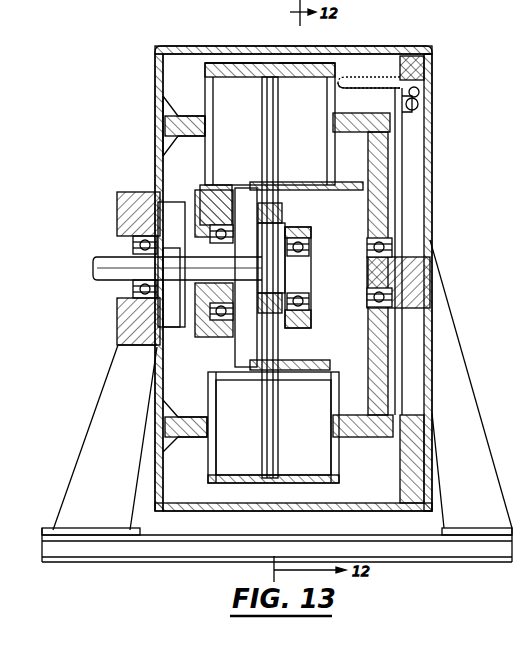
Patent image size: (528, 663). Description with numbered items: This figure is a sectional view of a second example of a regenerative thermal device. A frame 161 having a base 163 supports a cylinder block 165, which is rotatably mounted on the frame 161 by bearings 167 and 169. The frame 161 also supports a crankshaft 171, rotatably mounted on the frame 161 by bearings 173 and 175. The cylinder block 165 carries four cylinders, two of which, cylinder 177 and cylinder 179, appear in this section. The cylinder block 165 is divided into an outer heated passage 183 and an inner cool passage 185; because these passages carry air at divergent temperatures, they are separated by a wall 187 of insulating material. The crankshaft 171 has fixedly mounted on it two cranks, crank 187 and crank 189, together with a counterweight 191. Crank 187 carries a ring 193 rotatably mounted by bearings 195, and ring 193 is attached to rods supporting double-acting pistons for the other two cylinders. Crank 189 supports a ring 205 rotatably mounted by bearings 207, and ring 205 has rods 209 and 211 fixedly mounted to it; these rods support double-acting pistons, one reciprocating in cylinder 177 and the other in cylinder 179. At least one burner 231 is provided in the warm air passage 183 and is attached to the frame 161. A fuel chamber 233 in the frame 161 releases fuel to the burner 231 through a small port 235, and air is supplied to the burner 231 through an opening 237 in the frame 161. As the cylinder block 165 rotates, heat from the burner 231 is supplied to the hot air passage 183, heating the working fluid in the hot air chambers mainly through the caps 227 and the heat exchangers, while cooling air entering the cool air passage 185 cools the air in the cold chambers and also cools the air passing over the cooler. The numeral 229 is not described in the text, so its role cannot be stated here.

The frame 161 is at (118, 198).
The base 163 is at (82, 452).
The cylinder block 165 is at (204, 192).
The bearing 167 is at (200, 342).
The bearing 169 is at (362, 300).
The crankshaft 171 is at (102, 275).
The bearing 173 is at (134, 244).
The bearing 175 is at (205, 264).
The cylinder 177 is at (212, 96).
The cylinder 179 is at (338, 464).
The outer heated passage 183 is at (172, 70).
The inner cool passage 185 is at (178, 152).
The wall of insulating material 187 is at (164, 127).
The crank 189 is at (272, 275).
The counterweight 191 is at (135, 320).
The ring 193 is at (296, 338).
The bearings 195 is at (300, 296).
The ring 205 is at (284, 215).
The bearings 207 is at (246, 180).
The rod 209 is at (279, 180).
The rod 211 is at (266, 386).
The cap 227 is at (240, 68).
The top plate 229 is at (293, 62).
The burner 231 is at (365, 84).
The fuel chamber 233 is at (420, 102).
The small port 235 is at (420, 100).
The opening 237 is at (420, 88).